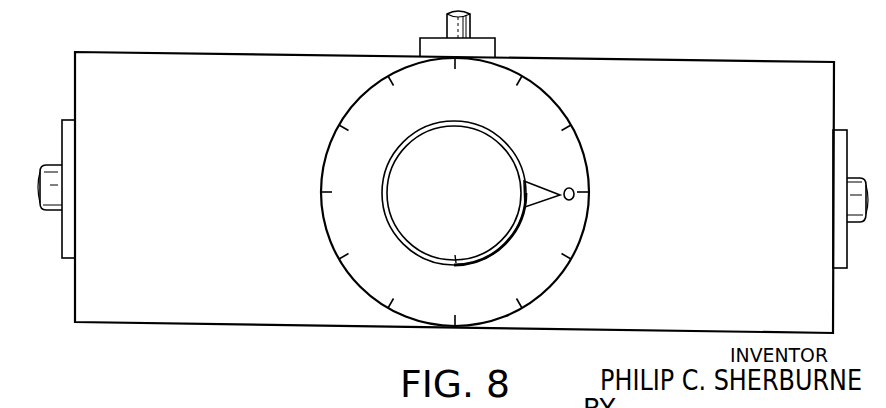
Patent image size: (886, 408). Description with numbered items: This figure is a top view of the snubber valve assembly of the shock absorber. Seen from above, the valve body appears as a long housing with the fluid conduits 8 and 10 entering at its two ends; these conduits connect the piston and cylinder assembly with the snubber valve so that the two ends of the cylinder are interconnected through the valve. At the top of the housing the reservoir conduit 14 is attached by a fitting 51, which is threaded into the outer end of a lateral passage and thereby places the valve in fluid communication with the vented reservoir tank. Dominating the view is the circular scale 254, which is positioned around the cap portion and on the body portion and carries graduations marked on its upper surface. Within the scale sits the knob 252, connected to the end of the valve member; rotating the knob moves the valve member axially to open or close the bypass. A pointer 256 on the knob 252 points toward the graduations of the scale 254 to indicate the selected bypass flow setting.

The fluid conduit 8 is at (52, 212).
The fluid conduit 10 is at (856, 223).
The reservoir conduit 14 is at (470, 21).
The fitting 51 is at (495, 47).
The knob 252 is at (407, 200).
The scale 254 is at (536, 268).
The pointer 256 is at (541, 186).